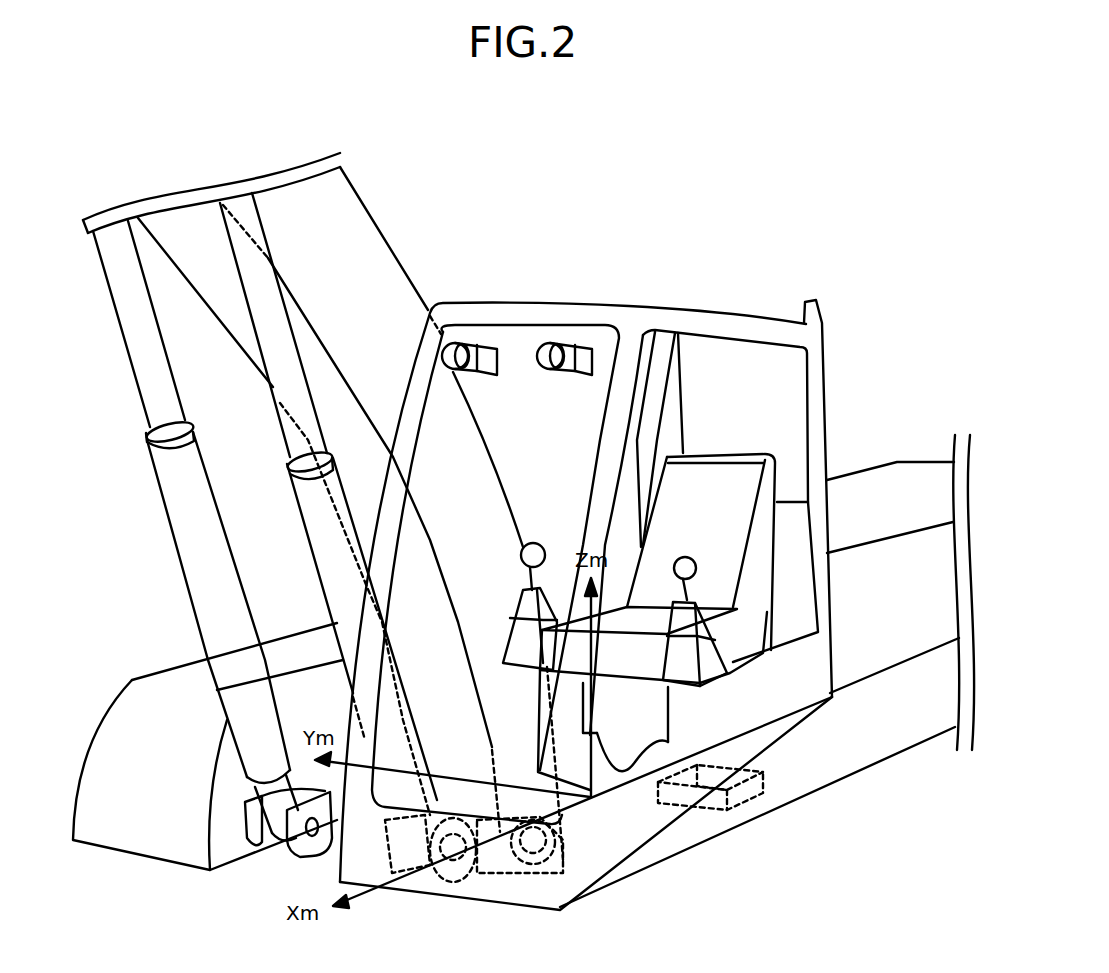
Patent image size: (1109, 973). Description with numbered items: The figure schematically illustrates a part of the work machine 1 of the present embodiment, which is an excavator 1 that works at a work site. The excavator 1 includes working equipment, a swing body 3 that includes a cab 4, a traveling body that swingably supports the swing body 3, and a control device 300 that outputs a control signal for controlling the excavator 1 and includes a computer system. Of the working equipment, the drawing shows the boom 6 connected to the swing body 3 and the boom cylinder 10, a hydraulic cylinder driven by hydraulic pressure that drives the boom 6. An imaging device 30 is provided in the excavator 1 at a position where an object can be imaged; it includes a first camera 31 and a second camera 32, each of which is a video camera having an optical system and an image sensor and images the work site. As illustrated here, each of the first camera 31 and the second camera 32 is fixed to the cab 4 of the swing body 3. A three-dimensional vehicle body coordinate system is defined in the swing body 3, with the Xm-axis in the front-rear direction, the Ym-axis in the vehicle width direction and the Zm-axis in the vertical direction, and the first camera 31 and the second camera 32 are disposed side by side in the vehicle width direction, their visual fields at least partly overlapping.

The work machine (excavator) 1 is at (766, 192).
The swing body 3 is at (843, 758).
The cab 4 is at (720, 313).
The boom 6 is at (373, 240).
The boom cylinder 10 is at (180, 557).
The imaging device 30 is at (523, 257).
The first camera 31 is at (585, 343).
The second camera 32 is at (493, 343).
The control device 300 is at (753, 795).